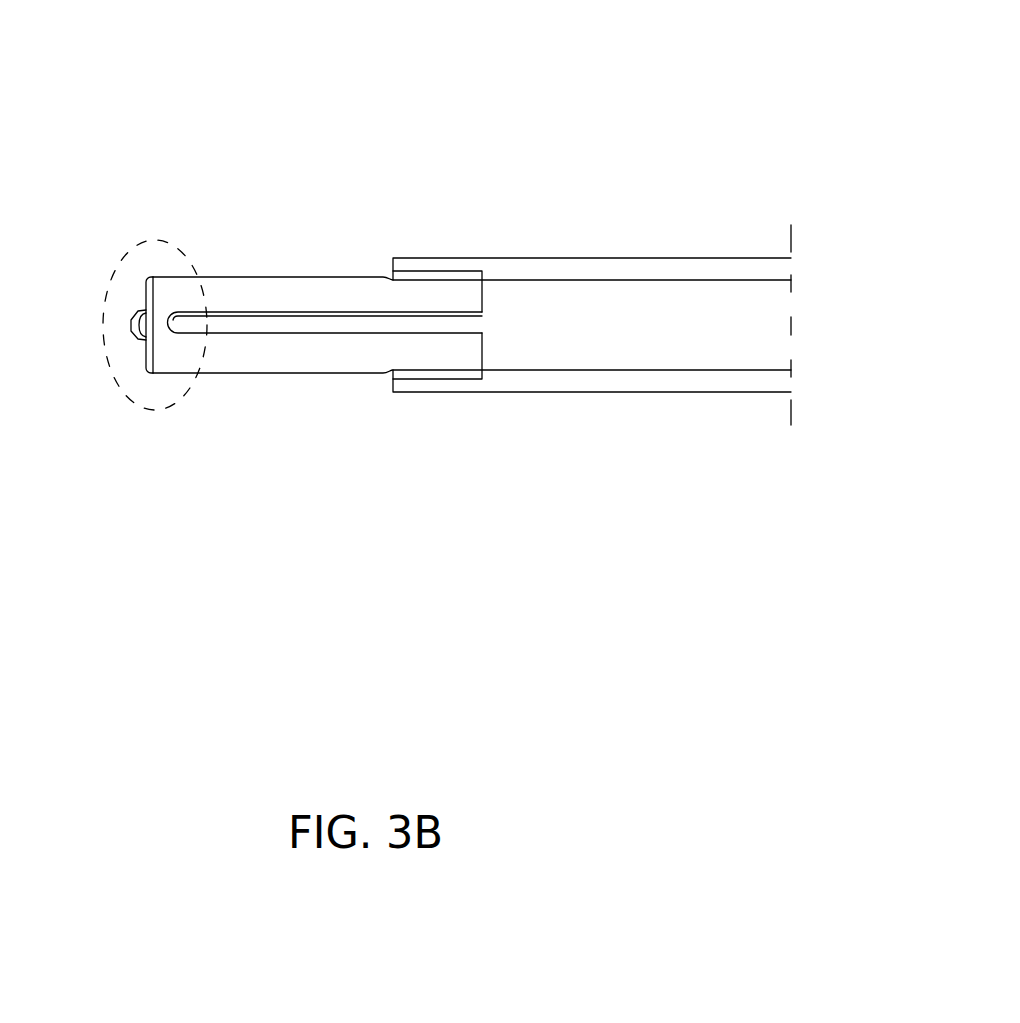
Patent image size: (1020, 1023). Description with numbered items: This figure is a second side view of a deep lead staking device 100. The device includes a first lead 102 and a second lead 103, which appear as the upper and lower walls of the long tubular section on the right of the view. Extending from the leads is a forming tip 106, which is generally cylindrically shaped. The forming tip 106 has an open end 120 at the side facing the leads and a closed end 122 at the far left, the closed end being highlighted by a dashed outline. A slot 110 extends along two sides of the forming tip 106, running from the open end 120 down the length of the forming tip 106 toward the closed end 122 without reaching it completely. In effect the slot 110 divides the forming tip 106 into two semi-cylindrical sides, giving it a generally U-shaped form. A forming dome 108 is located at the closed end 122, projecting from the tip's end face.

The deep lead staking device 100 is at (624, 130).
The first lead 102 is at (645, 258).
The second lead 103 is at (662, 392).
The forming tip 106 is at (248, 374).
The forming dome 108 is at (144, 346).
The slot 110 is at (275, 329).
The open end 120 is at (520, 324).
The closed end 122 is at (148, 240).